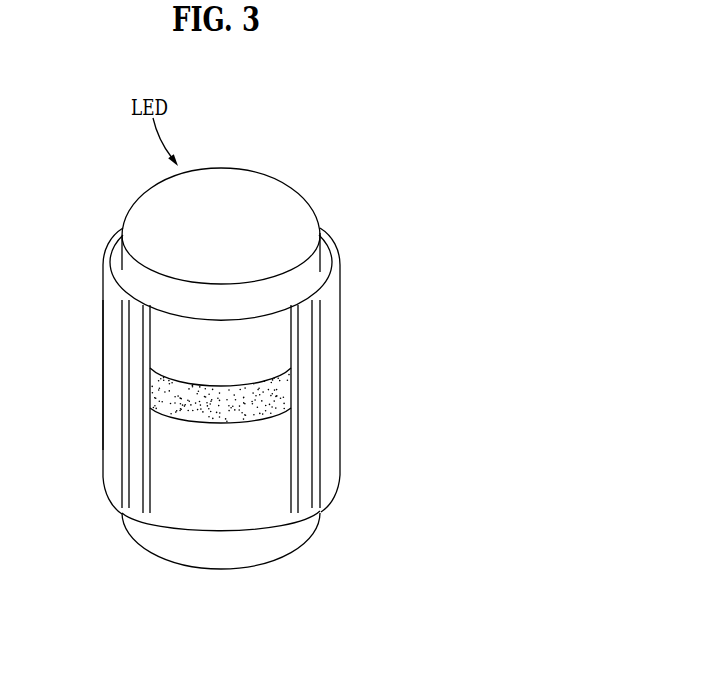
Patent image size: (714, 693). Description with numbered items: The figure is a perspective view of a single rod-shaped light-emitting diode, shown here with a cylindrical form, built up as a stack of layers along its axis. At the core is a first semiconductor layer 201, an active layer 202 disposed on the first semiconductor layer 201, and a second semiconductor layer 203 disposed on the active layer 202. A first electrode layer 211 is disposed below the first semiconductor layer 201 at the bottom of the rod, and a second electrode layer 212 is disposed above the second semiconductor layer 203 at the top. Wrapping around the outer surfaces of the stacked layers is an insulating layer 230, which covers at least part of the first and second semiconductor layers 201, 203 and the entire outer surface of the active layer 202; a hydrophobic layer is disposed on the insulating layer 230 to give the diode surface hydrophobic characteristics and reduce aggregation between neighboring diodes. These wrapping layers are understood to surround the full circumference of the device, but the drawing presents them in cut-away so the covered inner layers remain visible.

The first semiconductor layer 201 is at (268, 474).
The active layer 202 is at (270, 388).
The second semiconductor layer 203 is at (268, 347).
The first electrode layer 211 is at (223, 553).
The second electrode layer 212 is at (225, 184).
The insulating layer 230 is at (137, 329).